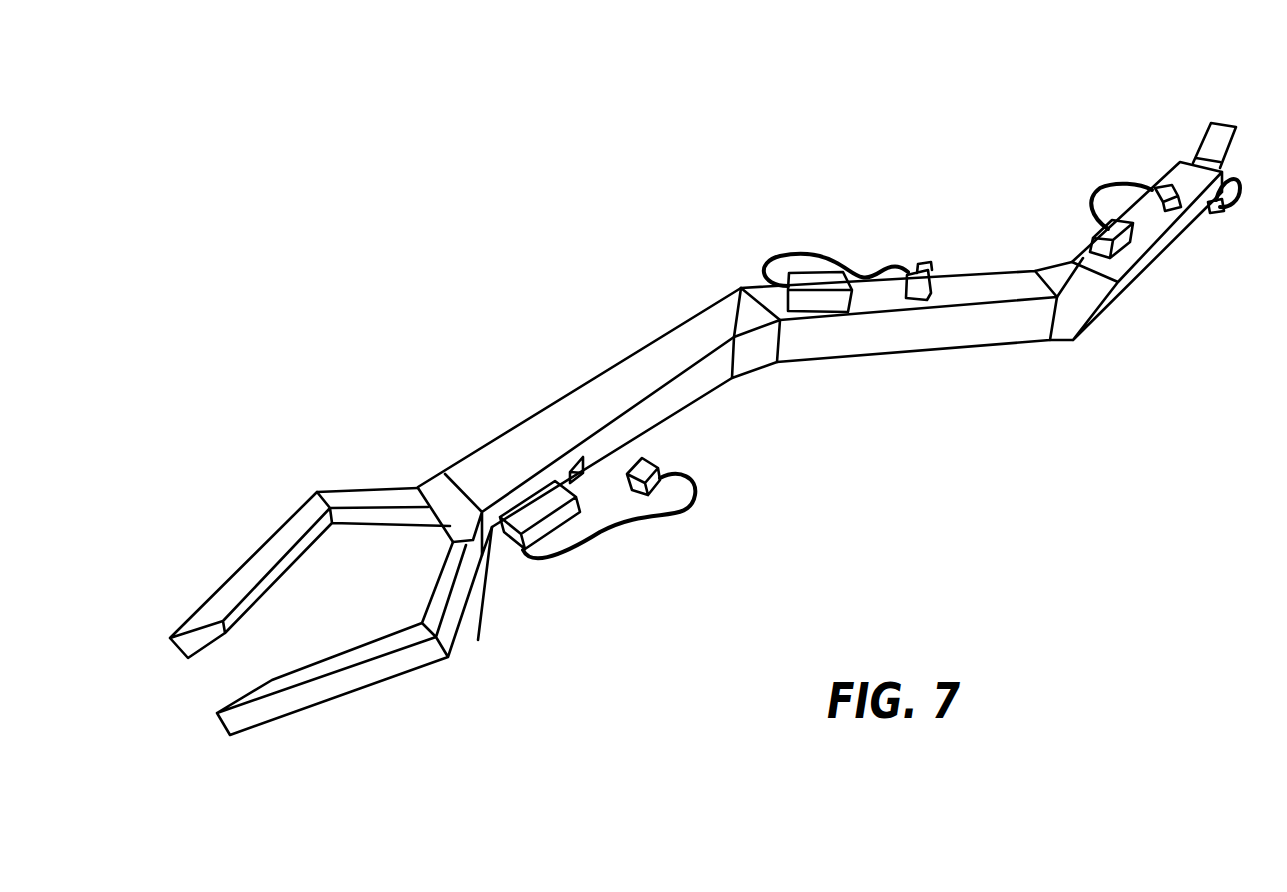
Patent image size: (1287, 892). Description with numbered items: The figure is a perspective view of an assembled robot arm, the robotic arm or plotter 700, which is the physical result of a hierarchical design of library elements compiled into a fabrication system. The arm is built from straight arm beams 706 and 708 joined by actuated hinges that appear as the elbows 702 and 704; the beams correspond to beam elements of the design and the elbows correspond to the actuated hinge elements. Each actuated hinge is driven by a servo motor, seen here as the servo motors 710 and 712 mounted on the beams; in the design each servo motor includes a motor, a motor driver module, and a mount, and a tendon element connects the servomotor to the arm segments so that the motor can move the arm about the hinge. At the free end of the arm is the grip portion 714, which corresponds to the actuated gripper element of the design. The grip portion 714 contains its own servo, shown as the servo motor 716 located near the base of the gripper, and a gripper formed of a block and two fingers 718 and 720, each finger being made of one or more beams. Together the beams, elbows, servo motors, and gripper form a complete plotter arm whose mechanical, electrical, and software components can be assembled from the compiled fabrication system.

The robotic arm or plotter 700 is at (705, 426).
The elbow 702 is at (740, 287).
The elbow 704 is at (1067, 341).
The arm beam 706 is at (900, 353).
The arm beam 708 is at (553, 400).
The servo motor 710 is at (823, 258).
The servo motor 712 is at (1088, 240).
The grip portion 714 is at (230, 466).
The servo motor 716 is at (552, 550).
The finger 718 is at (390, 673).
The finger 720 is at (360, 490).